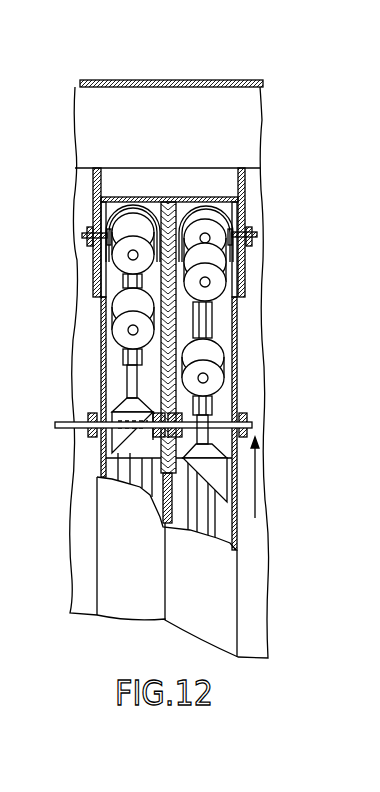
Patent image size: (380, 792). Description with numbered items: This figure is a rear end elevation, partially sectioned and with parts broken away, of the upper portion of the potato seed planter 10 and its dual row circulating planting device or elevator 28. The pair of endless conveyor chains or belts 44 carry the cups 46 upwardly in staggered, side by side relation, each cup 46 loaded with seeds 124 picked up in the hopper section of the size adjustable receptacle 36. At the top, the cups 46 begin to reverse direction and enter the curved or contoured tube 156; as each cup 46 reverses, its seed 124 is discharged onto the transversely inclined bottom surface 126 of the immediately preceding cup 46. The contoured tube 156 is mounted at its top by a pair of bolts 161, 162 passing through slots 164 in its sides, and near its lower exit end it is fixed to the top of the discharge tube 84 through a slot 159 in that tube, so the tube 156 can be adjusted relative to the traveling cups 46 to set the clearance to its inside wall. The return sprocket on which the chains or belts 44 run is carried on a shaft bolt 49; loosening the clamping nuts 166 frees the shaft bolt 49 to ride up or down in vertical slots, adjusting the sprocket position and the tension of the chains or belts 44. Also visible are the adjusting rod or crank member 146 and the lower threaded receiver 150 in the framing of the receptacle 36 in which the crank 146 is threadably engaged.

The potato seed planter 10 is at (101, 81).
The size adjustable receptacle 36 is at (158, 108).
The cup 46 is at (95, 199).
The curved or contoured tube 156 is at (202, 200).
The slot 159 is at (100, 465).
The bolt 161 is at (84, 234).
The bolt 162 is at (252, 229).
The slots 164 is at (93, 251).
The endless conveyor chains or belts 44 is at (100, 306).
The transversely inclined bottom surface 126 is at (118, 342).
The circulating planting device or elevator 28 is at (209, 333).
The seeds 124 is at (115, 395).
The shaft bolt 49 is at (50, 433).
The clamping nuts 166 is at (89, 438).
The discharge tube 84 is at (147, 591).
The adjusting rod or crank member 146 is at (15, 561).
The lower threaded receiver 150 is at (15, 629).